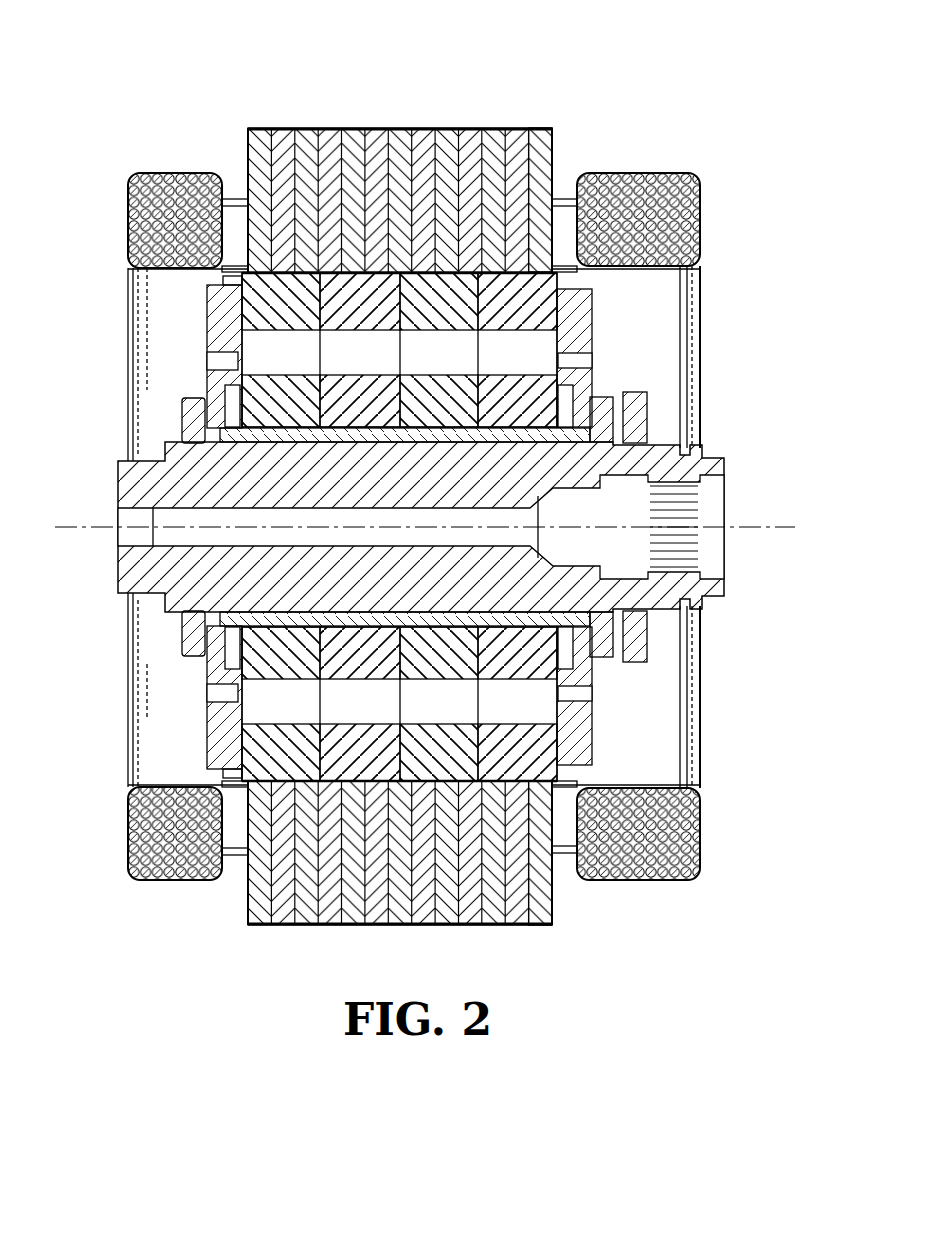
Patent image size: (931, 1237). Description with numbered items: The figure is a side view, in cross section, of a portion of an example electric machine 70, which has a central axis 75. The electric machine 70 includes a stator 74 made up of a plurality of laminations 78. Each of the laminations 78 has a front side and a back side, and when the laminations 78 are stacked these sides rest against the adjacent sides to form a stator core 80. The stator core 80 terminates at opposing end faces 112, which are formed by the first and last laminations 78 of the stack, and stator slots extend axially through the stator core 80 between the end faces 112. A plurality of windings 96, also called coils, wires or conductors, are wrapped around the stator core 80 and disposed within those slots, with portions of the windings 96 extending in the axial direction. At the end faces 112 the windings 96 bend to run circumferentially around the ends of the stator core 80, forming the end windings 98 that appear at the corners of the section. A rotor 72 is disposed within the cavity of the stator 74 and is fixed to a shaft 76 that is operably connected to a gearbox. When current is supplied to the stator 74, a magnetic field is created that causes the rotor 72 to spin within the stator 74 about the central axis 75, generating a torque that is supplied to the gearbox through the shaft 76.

The electric machine 70 is at (203, 82).
The rotor 72 is at (517, 297).
The stator 74 is at (322, 128).
The central axis 75 is at (762, 515).
The shaft 76 is at (710, 460).
The laminations 78 is at (540, 140).
The stator core 80 is at (430, 128).
The windings 96 is at (236, 842).
The end windings 98 is at (682, 188).
The end faces 112 is at (247, 163).